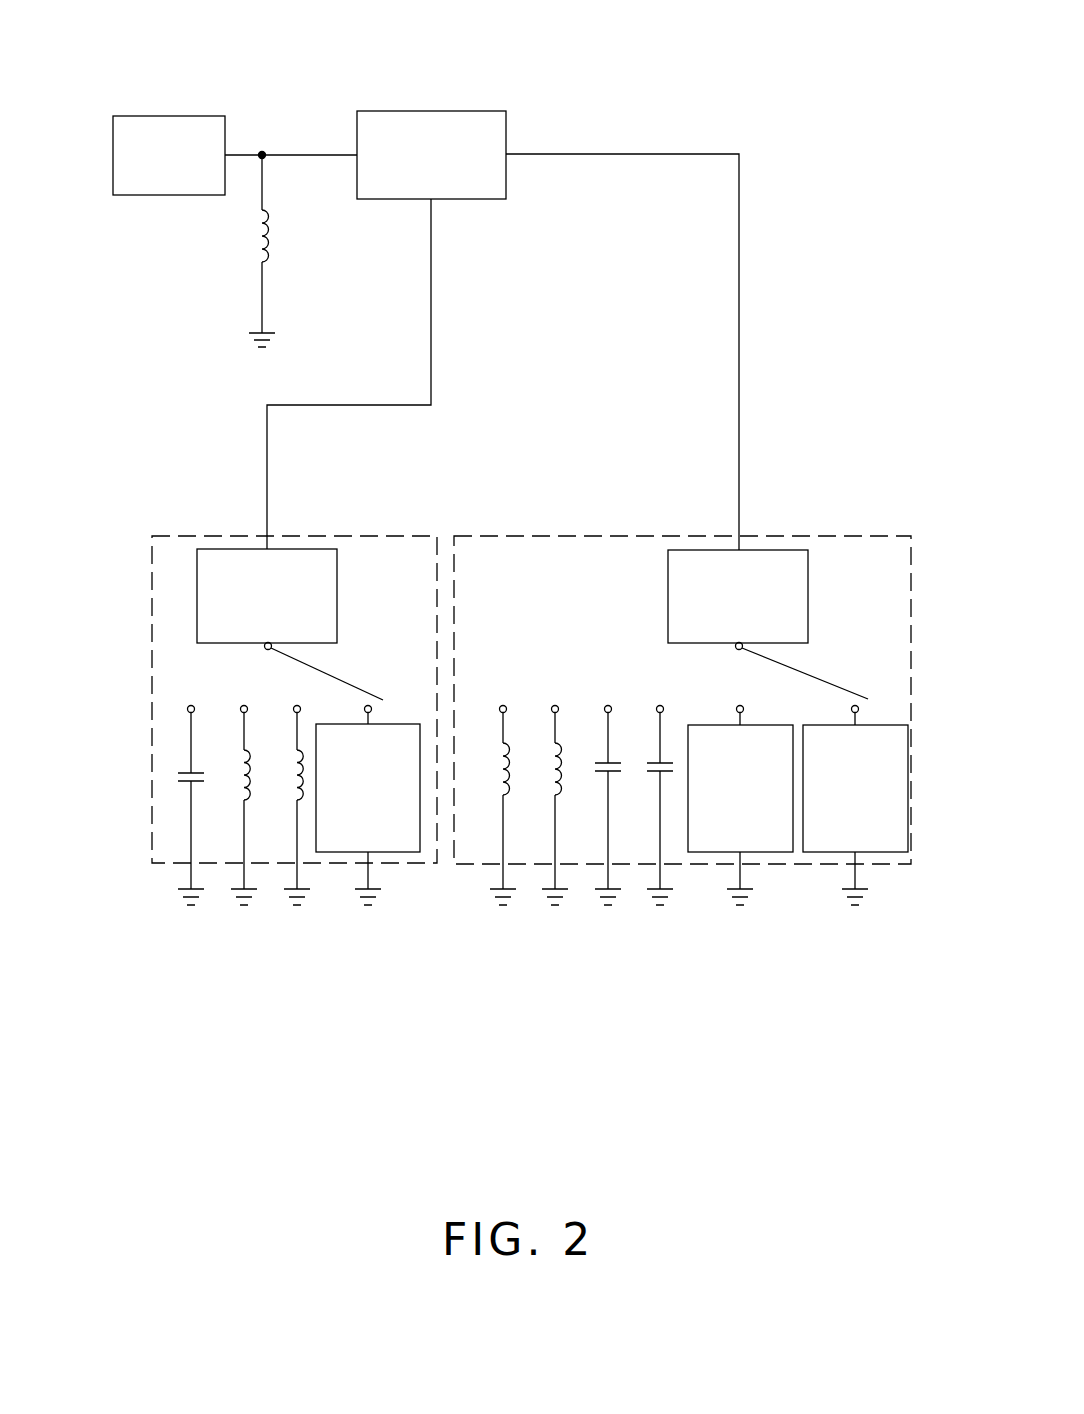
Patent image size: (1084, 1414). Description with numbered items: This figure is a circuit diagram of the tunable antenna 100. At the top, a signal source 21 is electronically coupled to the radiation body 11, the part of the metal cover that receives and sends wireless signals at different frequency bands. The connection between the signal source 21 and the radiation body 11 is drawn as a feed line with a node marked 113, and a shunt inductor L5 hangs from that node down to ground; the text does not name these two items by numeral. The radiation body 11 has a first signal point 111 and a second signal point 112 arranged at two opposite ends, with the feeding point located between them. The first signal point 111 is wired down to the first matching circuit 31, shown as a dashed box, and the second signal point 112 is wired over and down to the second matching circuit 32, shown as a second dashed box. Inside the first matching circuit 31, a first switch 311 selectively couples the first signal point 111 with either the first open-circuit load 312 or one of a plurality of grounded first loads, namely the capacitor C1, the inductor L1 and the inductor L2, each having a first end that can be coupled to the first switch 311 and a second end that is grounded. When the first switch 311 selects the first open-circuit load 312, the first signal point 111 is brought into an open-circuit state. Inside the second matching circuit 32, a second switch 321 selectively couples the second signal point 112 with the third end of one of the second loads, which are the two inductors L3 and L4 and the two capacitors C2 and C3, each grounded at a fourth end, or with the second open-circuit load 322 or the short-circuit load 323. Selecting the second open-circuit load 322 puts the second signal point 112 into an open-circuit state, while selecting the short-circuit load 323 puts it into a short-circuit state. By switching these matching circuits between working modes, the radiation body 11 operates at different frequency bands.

The tunable antenna 100 is at (597, 39).
The signal source 21 is at (195, 116).
The feed point 113 is at (357, 150).
The inductor L5 is at (247, 251).
The radiation body 11 is at (490, 111).
The second signal point 112 is at (506, 152).
The first signal point 111 is at (431, 200).
The first matching circuit 31 is at (152, 690).
The first switch 311 is at (312, 549).
The first open-circuit load 312 is at (399, 852).
The capacitor C1 is at (182, 806).
The inductor L1 is at (232, 806).
The inductor L2 is at (283, 806).
The second matching circuit 32 is at (863, 536).
The second switch 321 is at (775, 549).
The second open-circuit load 322 is at (762, 852).
The short-circuit load 323 is at (881, 853).
The inductor L3 is at (491, 806).
The inductor L4 is at (543, 806).
The capacitor C2 is at (595, 806).
The capacitor C3 is at (647, 806).